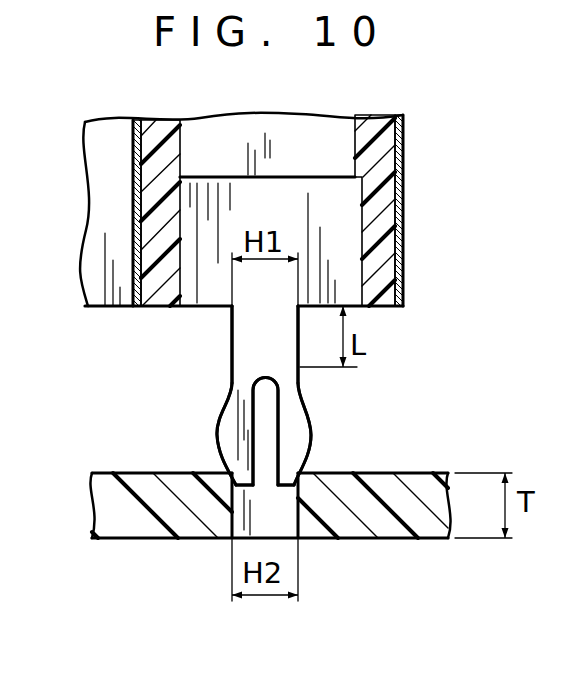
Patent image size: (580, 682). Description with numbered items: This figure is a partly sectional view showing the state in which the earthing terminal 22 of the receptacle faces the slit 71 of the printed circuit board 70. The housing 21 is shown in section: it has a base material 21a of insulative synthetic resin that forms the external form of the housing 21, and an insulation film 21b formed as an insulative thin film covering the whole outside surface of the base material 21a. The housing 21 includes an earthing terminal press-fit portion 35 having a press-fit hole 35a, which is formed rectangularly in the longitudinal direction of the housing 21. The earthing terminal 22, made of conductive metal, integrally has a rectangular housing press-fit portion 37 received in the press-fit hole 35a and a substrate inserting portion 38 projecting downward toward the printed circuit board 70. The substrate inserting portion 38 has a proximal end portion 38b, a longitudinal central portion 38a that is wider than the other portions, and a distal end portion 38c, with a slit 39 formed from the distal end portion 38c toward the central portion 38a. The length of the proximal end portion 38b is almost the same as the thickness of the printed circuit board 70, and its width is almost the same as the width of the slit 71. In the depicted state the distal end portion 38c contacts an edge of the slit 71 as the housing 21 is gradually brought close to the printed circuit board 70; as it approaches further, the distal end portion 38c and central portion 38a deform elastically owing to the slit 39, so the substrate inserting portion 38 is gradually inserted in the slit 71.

The housing 21 is at (321, 208).
The base material 21a is at (385, 207).
The insulation film 21b is at (401, 172).
The earthing terminal 22 is at (285, 178).
The earthing terminal press-fit portion 35 is at (404, 250).
The press-fit hole 35a is at (232, 150).
The housing press-fit portion 37 is at (185, 225).
The substrate inserting portion 38 is at (231, 360).
The central portion 38a is at (228, 419).
The proximal end portion 38b is at (232, 323).
The distal end portion 38c is at (233, 478).
The slit 39 is at (268, 425).
The printed circuit board 70 is at (400, 490).
The slit 71 is at (283, 540).